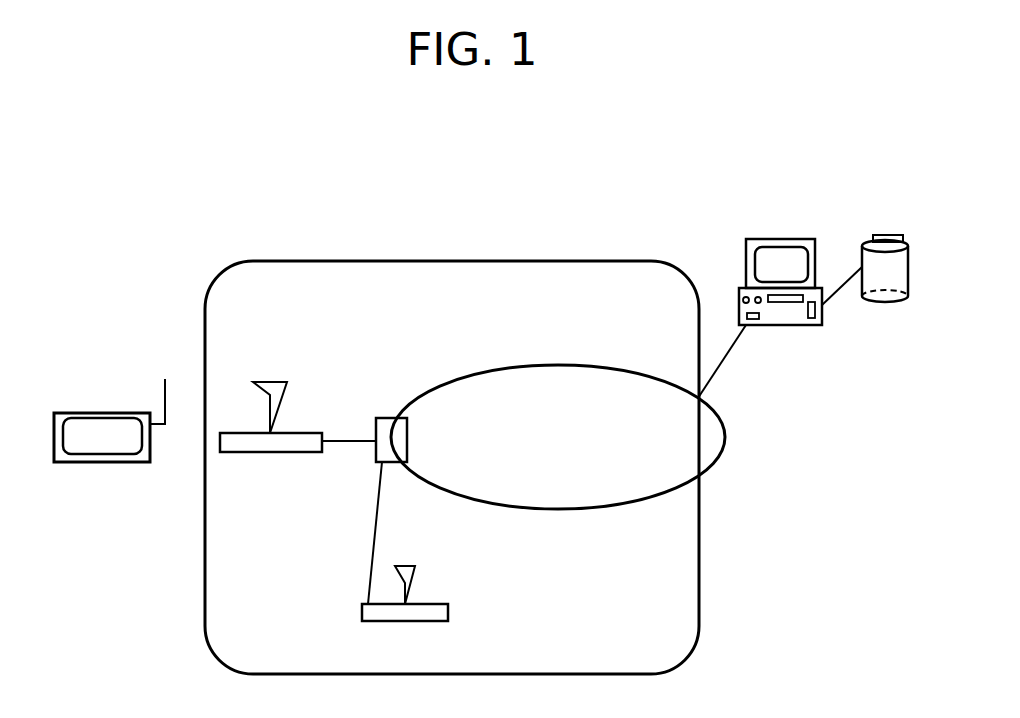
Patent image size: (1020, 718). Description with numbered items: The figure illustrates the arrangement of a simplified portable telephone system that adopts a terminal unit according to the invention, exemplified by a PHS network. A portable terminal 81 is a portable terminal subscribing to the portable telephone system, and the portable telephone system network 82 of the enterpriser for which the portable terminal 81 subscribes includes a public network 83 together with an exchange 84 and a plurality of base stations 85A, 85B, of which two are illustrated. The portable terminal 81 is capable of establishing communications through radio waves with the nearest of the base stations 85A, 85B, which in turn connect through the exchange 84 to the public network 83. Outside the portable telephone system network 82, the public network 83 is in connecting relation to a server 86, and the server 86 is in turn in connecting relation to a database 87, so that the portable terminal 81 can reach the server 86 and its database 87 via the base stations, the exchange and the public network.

The portable terminal 81 is at (89, 462).
The portable telephone system network 82 is at (420, 261).
The public network 83 is at (478, 456).
The exchange 84 is at (392, 418).
The base station 85A is at (260, 452).
The base station 85B is at (377, 621).
The server 86 is at (775, 239).
The database 87 is at (878, 302).